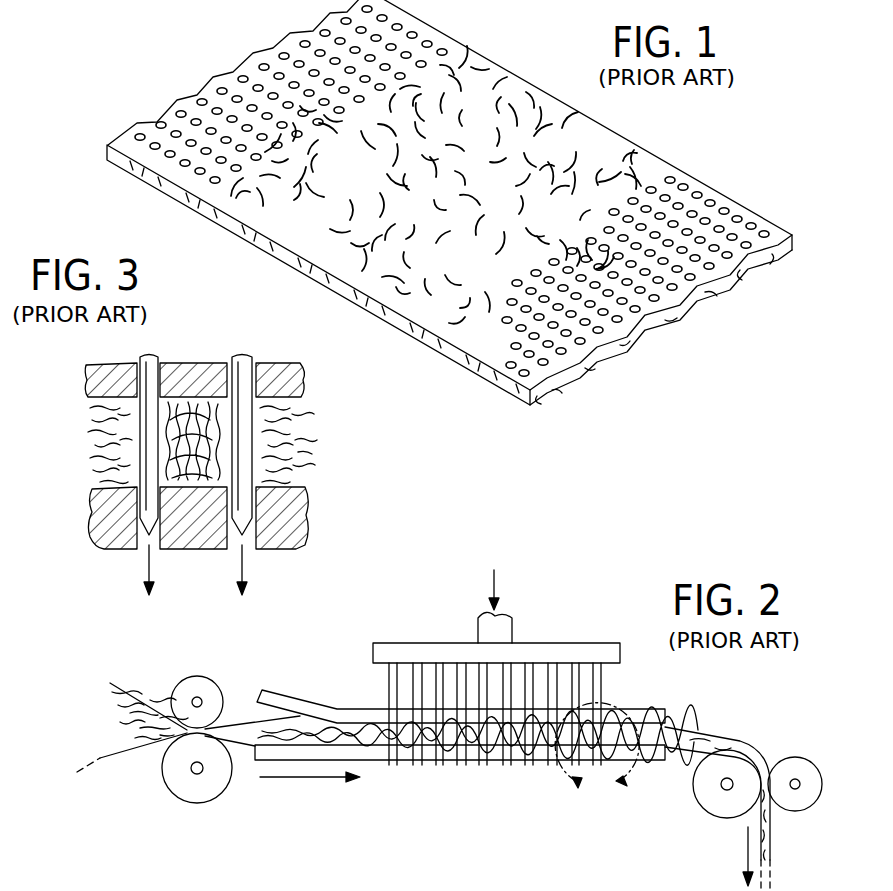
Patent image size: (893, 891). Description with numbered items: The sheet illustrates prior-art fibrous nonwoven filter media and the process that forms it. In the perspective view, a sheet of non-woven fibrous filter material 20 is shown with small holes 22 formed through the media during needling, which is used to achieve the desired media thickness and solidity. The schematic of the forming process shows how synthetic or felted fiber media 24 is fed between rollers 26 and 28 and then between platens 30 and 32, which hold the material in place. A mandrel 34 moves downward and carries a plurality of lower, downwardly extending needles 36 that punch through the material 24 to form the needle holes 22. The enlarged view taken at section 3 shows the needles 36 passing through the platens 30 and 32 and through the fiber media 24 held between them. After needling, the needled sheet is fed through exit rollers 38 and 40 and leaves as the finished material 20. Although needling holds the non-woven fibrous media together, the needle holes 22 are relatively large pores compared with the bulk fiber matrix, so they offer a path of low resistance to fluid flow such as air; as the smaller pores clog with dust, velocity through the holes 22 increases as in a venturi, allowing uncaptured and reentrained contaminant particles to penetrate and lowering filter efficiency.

In FIG. 1, the non-woven fibrous filter material 20 is at (684, 146).
In FIG. 2, the non-woven fibrous filter material 20 is at (771, 872).
In FIG. 1, the needle holes 22 is at (726, 213).
In FIG. 2, the needle holes 22 is at (521, 883).
In FIG. 1, the fiber media 24 is at (781, 254).
In FIG. 3, the fiber media 24 is at (90, 437).
In FIG. 2, the fiber media 24 is at (103, 699).
In FIG. 2, the roller 26 is at (207, 688).
In FIG. 2, the roller 28 is at (213, 792).
In FIG. 3, the platen 30 is at (84, 374).
In FIG. 2, the platen 30 is at (347, 714).
In FIG. 3, the platen 32 is at (100, 508).
In FIG. 2, the platen 32 is at (378, 760).
In FIG. 2, the mandrel 34 is at (557, 643).
In FIG. 3, the needles 36 is at (240, 357).
In FIG. 2, the needles 36 is at (582, 700).
In FIG. 2, the exit roller 38 is at (805, 803).
In FIG. 2, the exit roller 40 is at (717, 802).
In FIG. 2, the section 3— 3 is at (597, 754).